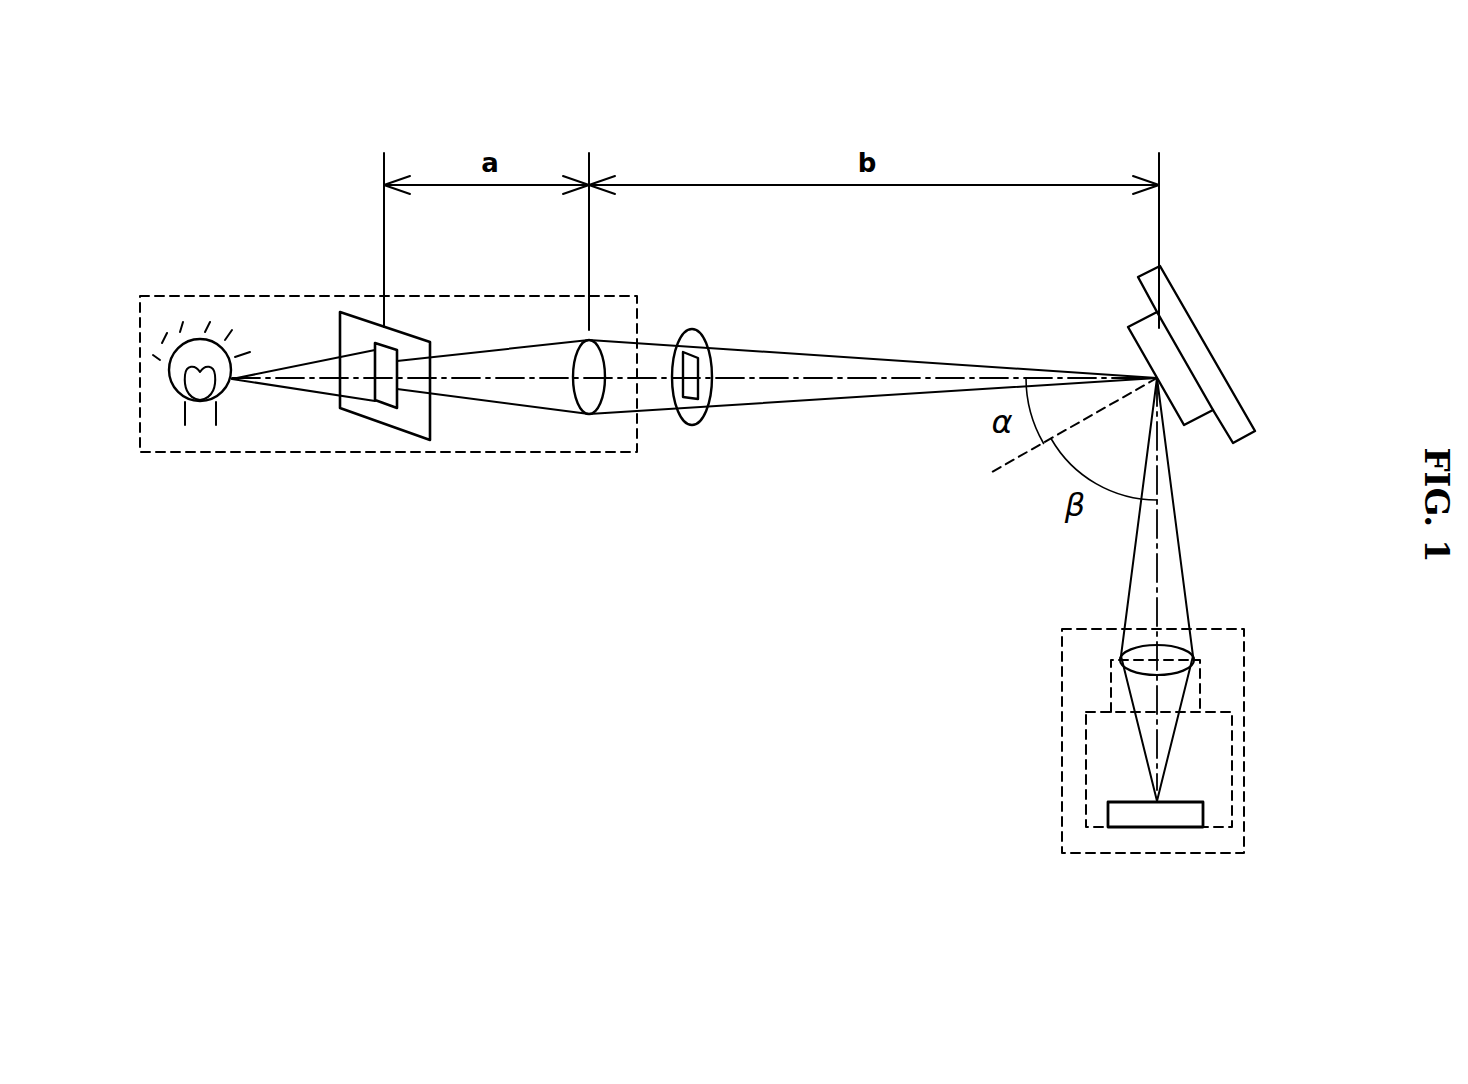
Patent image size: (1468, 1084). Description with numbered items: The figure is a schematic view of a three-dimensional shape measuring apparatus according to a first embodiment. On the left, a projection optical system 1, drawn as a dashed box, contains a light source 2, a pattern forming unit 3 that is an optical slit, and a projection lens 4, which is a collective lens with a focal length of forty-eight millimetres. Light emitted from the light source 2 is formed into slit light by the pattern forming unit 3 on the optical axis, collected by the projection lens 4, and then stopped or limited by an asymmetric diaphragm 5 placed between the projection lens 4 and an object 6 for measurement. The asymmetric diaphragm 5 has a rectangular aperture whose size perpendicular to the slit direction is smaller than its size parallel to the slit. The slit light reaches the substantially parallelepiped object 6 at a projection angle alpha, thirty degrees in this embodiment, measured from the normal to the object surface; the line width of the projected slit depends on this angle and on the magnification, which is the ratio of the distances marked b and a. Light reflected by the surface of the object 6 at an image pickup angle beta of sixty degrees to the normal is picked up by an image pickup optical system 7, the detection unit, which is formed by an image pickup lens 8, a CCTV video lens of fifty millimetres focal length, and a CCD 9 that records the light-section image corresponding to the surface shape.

The projection optical system 1 is at (300, 292).
The light source 2 is at (202, 423).
The pattern forming unit 3 is at (380, 422).
The projection lens 4 is at (593, 412).
The asymmetric diaphragm 5 is at (693, 422).
The object for measurement 6 is at (1188, 407).
The image pickup optical system 7 is at (1060, 715).
The image pickup lens 8 is at (1183, 668).
The CCD 9 is at (1203, 815).